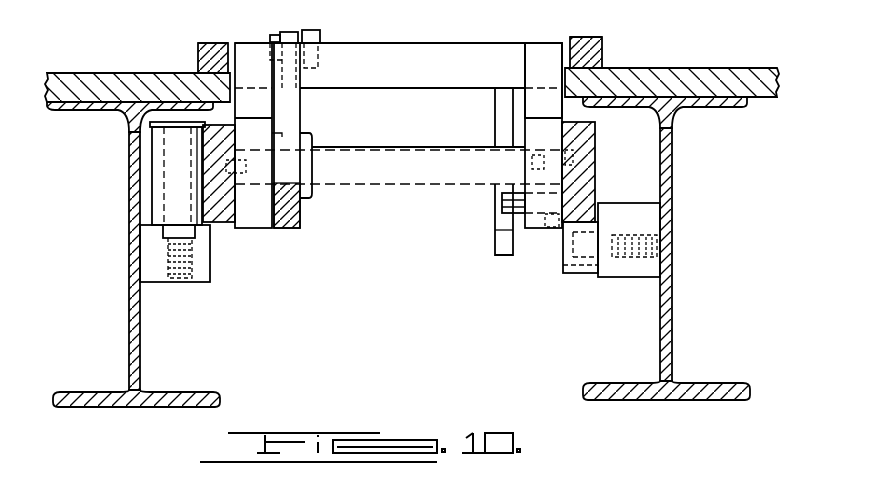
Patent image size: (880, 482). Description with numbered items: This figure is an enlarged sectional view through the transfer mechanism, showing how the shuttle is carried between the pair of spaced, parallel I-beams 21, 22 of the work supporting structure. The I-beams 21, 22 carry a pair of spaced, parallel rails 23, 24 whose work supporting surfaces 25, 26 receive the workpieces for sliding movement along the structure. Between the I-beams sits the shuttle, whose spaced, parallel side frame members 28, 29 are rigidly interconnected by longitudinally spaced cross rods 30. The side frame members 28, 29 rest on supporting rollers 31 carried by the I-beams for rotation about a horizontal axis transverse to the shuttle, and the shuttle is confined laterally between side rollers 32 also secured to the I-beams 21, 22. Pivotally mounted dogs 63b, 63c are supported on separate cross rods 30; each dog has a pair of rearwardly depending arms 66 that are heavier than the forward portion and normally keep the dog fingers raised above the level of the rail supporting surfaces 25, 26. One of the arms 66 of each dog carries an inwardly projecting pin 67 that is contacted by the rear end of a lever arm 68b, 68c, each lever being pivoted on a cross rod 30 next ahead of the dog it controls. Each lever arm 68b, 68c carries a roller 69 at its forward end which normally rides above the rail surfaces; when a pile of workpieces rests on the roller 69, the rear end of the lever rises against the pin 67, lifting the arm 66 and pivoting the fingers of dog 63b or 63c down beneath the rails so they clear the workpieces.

The I-beam 21 is at (132, 318).
The I-beam 22 is at (668, 297).
The rail 23 is at (198, 58).
The rail 24 is at (598, 55).
The work supporting surface 25 is at (213, 42).
The work supporting surface 26 is at (587, 36).
The side frame member 28 is at (217, 222).
The side frame member 29 is at (587, 175).
The cross rod 30 is at (394, 177).
The supporting roller 31 is at (584, 274).
The side roller 32 is at (173, 182).
The dog 63b is at (530, 47).
The dog 63c is at (423, 50).
The rearwardly depending arm 66 is at (251, 228).
The inwardly projecting pin 67 is at (497, 207).
The lever arm 68b is at (292, 228).
The lever arm 68c is at (494, 258).
The roller 69 is at (318, 33).